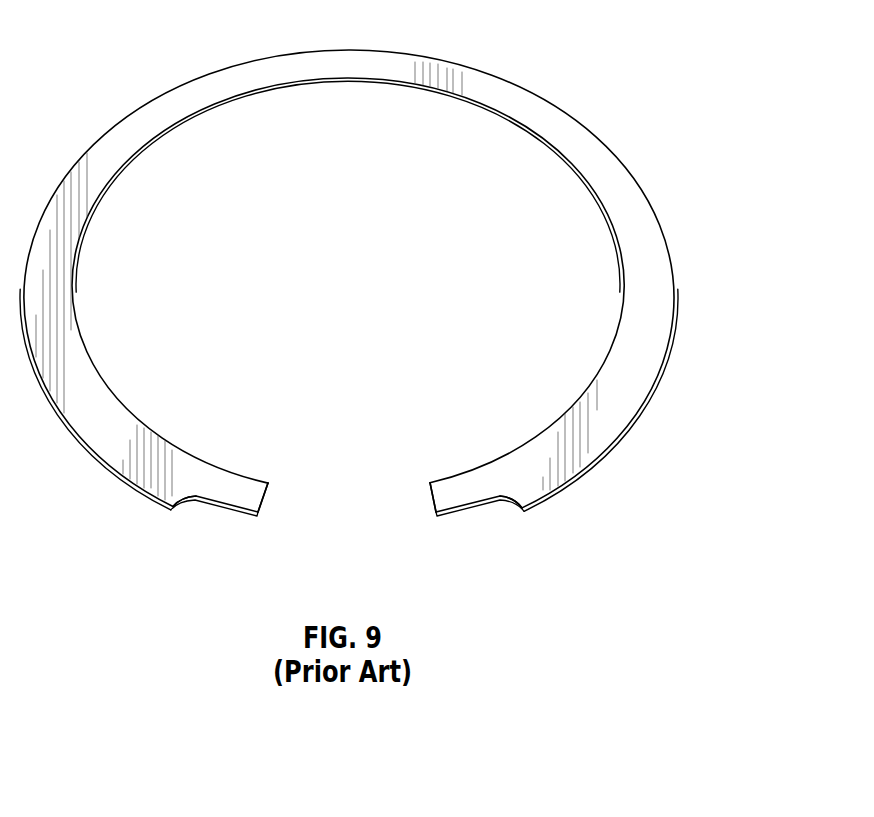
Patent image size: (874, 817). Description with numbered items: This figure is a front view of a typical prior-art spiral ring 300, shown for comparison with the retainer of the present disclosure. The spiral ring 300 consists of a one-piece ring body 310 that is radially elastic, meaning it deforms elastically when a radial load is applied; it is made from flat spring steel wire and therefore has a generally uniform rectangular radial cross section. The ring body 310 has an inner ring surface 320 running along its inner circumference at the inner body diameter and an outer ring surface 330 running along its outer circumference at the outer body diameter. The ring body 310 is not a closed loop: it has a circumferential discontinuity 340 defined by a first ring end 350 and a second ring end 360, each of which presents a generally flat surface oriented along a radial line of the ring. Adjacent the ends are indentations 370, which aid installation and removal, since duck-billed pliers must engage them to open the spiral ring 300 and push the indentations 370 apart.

The spiral ring 300 is at (664, 56).
The one-piece ring body 310 is at (637, 238).
The inner ring surface 320 is at (404, 86).
The outer ring surface 330 is at (508, 82).
The circumferential discontinuity 340 is at (430, 500).
The first ring end 350 is at (268, 487).
The second ring end 360 is at (354, 466).
The indentations 370 is at (197, 515).